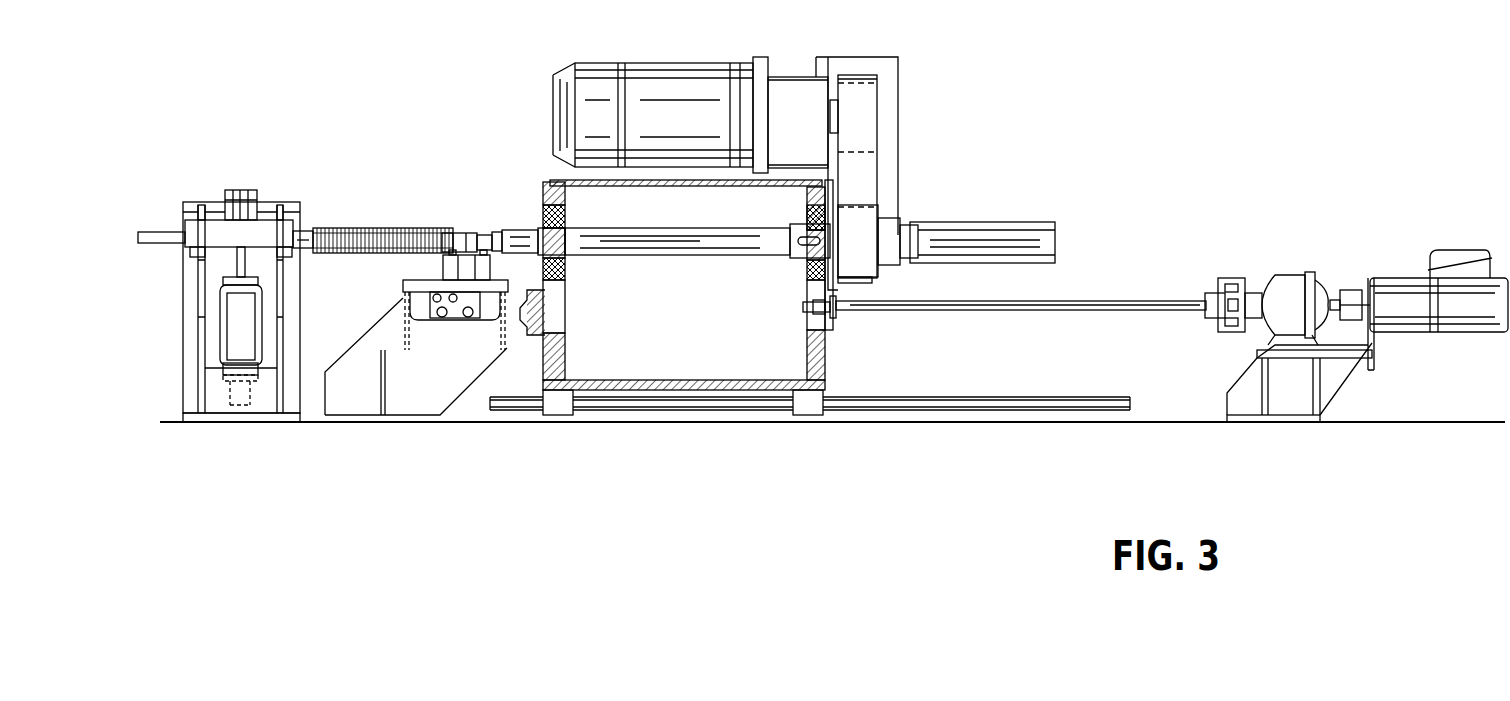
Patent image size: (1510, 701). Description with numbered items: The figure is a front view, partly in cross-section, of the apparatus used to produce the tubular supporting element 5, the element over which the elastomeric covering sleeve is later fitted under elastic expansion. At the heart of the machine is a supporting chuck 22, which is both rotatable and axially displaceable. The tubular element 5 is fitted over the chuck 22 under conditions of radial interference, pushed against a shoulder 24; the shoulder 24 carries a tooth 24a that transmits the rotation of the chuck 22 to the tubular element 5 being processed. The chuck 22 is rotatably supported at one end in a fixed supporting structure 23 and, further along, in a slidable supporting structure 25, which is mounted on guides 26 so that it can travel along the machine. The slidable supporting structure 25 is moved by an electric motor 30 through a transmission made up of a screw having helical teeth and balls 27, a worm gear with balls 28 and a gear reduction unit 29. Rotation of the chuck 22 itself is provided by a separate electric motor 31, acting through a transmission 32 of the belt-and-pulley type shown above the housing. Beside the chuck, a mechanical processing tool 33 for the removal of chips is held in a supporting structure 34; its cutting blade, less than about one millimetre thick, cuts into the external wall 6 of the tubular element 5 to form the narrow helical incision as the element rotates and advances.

The tubular supporting element 5 is at (375, 228).
The external wall 6 is at (403, 228).
The supporting chuck 22 is at (308, 228).
The fixed supporting structure 23 is at (304, 313).
The shoulder 24 is at (501, 231).
The tooth 24a is at (490, 233).
The slidable supporting structure 25 is at (545, 362).
The guides 26 is at (700, 405).
The screw having helical teeth and balls 27 is at (813, 300).
The worm gear with balls 28 is at (1012, 312).
The gear reduction unit 29 is at (1290, 275).
The electric motor 30 is at (1400, 282).
The electric motor 31 is at (672, 78).
The belt transmission housing 32 is at (865, 185).
The mechanical processing tool 33 is at (462, 235).
The supporting structure 34 is at (446, 265).